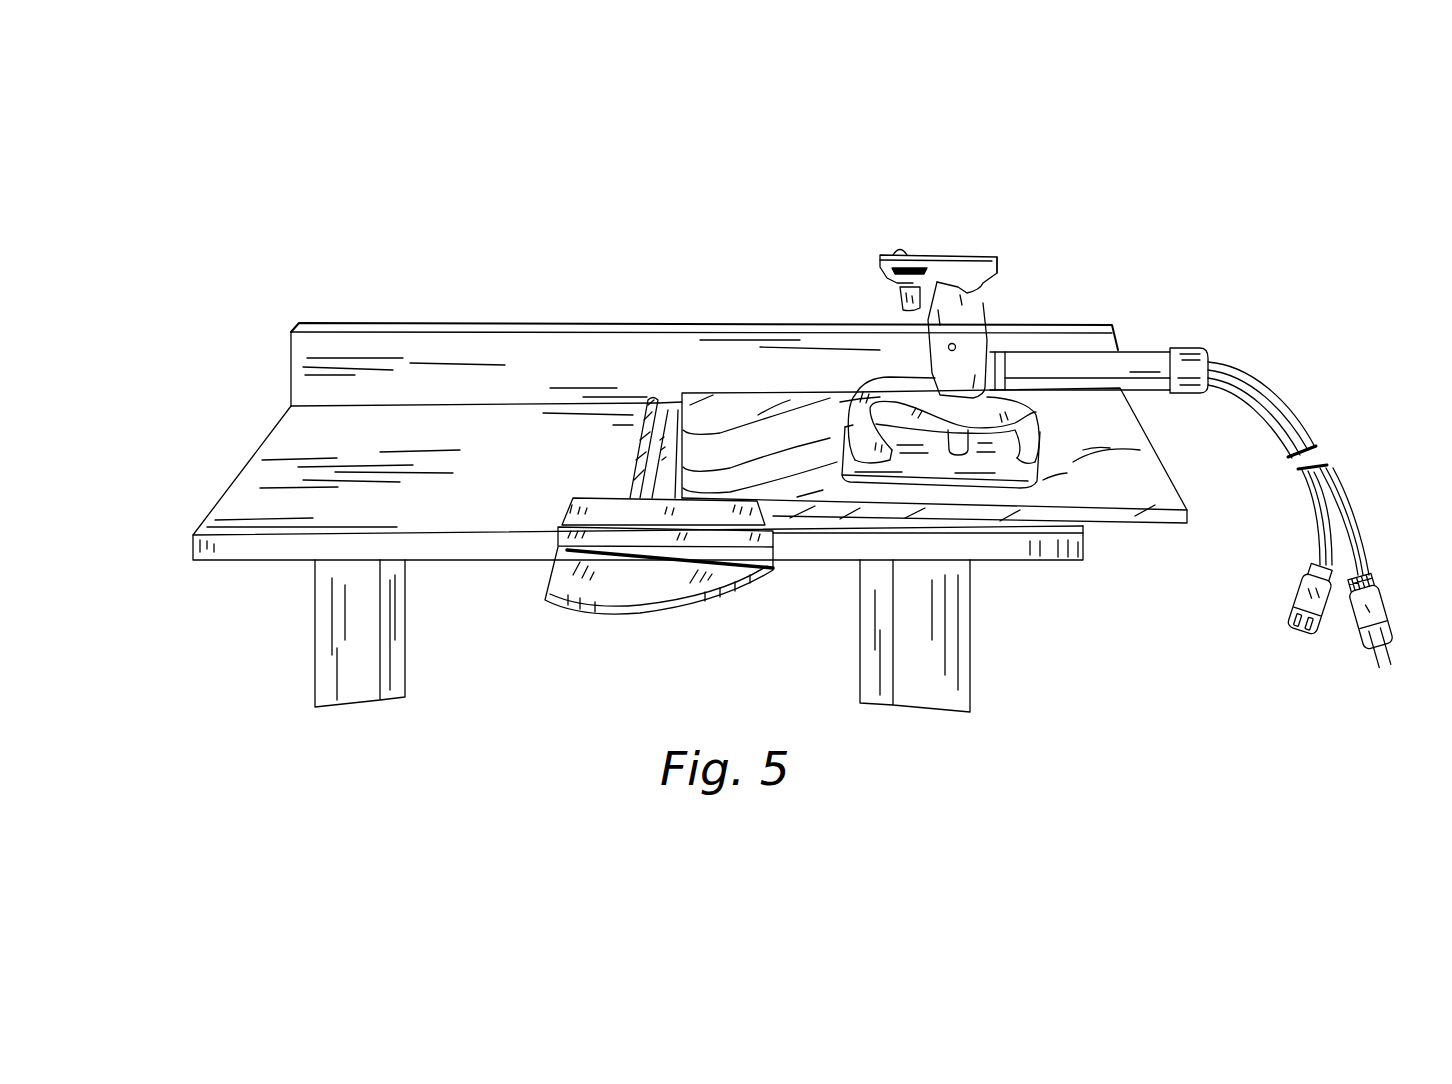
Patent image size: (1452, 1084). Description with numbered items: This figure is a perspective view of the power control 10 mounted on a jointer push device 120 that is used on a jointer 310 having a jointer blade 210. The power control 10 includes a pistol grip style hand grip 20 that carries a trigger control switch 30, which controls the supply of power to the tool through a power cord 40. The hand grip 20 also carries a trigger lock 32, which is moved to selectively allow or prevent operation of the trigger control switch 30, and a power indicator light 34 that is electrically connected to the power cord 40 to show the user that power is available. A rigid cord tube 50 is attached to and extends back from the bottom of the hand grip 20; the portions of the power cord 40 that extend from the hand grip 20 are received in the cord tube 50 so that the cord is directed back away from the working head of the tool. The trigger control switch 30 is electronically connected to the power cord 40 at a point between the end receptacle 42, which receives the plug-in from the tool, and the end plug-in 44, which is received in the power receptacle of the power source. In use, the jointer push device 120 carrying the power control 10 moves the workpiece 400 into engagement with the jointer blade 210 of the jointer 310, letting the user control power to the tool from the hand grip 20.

The power control 10 is at (1070, 267).
The hand grip 20 is at (965, 322).
The trigger control switch 30 is at (900, 305).
The trigger lock 32 is at (913, 268).
The power indicator light 34 is at (900, 250).
The power cord 40 is at (1287, 393).
The end receptacle 42 is at (1292, 637).
The end plug-in 44 is at (1363, 655).
The cord tube 50 is at (1121, 363).
The jointer push device 120 is at (1005, 467).
The jointer blade 210 is at (630, 473).
The jointer 310 is at (318, 432).
The workpiece 400 is at (1043, 430).